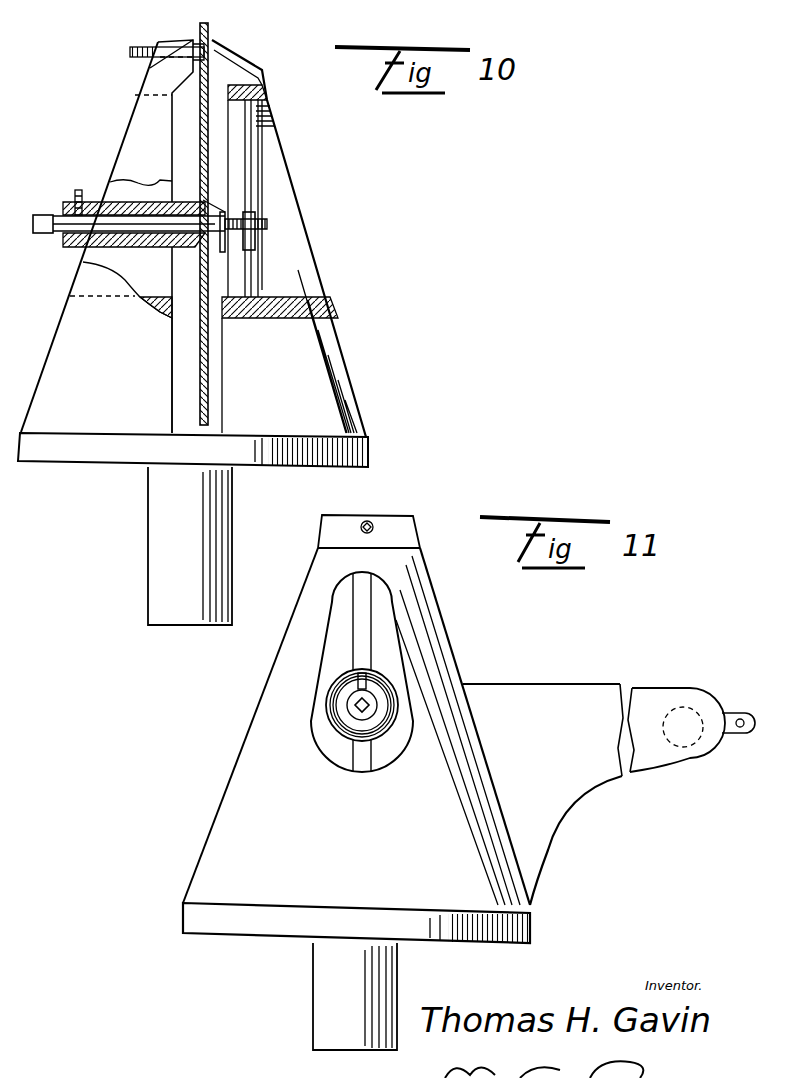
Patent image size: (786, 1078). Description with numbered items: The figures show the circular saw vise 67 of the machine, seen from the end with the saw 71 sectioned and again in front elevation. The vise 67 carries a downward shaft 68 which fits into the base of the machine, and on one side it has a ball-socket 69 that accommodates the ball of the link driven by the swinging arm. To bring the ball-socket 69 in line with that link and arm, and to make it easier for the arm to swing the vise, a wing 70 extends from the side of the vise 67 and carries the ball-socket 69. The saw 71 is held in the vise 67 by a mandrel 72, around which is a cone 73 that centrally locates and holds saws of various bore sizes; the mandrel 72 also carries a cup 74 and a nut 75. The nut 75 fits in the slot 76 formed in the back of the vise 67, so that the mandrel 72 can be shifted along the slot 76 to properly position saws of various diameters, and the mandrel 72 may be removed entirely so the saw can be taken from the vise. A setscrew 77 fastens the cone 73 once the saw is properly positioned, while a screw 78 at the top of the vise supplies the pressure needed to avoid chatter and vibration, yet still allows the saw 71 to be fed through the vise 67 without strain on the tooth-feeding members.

In FIG. 10, the circular saw vise 67 is at (345, 360).
In FIG. 11, the circular saw vise 67 is at (226, 822).
In FIG. 10, the shaft 68 is at (158, 536).
In FIG. 11, the shaft 68 is at (322, 986).
In FIG. 11, the ball-socket 69 is at (686, 706).
In FIG. 11, the wing 70 is at (594, 696).
In FIG. 10, the saw 71 is at (198, 373).
In FIG. 10, the mandrel 72 is at (58, 214).
In FIG. 11, the mandrel 72 is at (356, 706).
In FIG. 10, the cone 73 is at (190, 200).
In FIG. 11, the cone 73 is at (340, 722).
In FIG. 10, the cup 74 is at (224, 200).
In FIG. 11, the cup 74 is at (347, 736).
In FIG. 10, the nut 75 is at (256, 212).
In FIG. 10, the slot 76 is at (261, 123).
In FIG. 11, the slot 76 is at (380, 612).
In FIG. 10, the setscrew 77 is at (78, 188).
In FIG. 11, the setscrew 77 is at (356, 679).
In FIG. 10, the screw 78 is at (142, 46).
In FIG. 11, the screw 78 is at (372, 524).